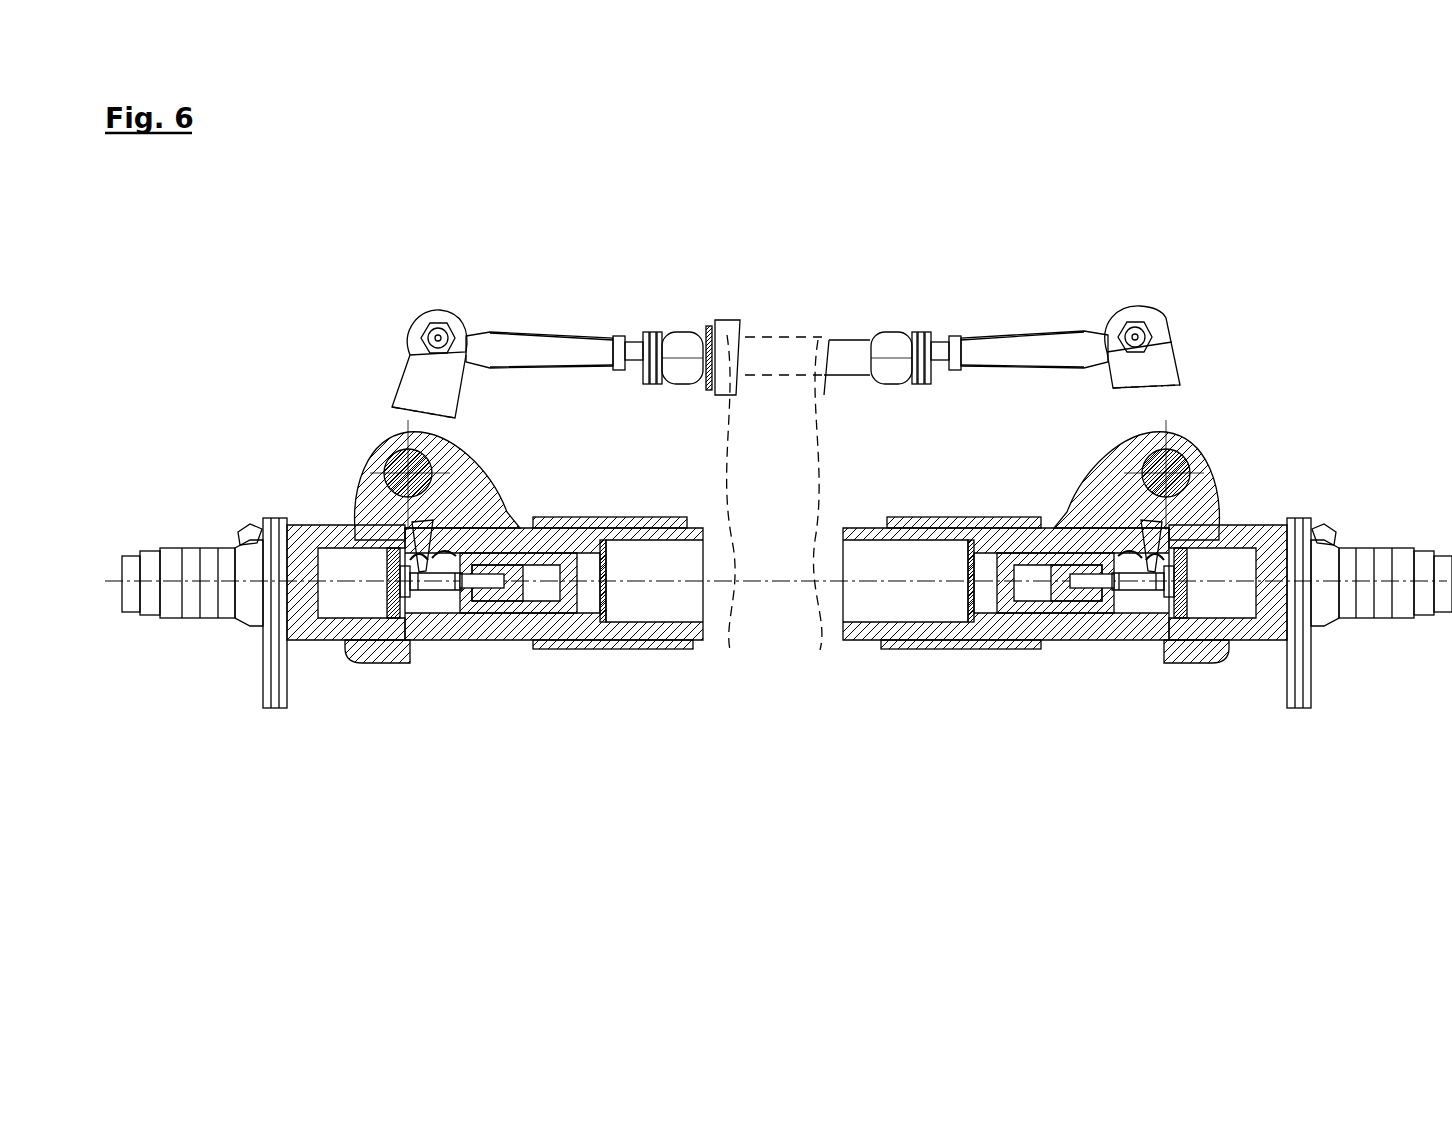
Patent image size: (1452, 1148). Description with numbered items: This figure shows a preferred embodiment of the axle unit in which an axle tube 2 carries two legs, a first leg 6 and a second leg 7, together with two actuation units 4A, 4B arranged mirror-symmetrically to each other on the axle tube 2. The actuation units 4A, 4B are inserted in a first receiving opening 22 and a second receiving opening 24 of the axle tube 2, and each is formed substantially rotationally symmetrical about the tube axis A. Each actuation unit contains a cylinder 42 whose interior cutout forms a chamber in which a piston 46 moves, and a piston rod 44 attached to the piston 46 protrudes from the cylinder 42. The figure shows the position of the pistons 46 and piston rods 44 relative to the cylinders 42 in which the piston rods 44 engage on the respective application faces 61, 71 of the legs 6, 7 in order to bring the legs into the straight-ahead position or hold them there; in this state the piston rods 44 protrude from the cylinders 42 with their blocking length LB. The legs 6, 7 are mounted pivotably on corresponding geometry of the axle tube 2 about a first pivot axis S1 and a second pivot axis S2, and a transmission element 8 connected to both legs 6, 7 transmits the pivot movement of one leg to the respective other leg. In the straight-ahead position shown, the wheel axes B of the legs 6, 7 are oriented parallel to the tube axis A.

The axle tube 2 is at (704, 642).
The first leg 6 is at (1235, 530).
The second leg 7 is at (352, 526).
The transmission element 8 is at (890, 346).
The first receiving opening 22 is at (978, 605).
The second receiving opening 24 is at (590, 608).
The cylinder 42 is at (556, 614).
The piston rod 44 is at (462, 592).
The piston 46 is at (502, 608).
The first application face 61 is at (1168, 602).
The second application face 71 is at (402, 606).
The first actuation unit 4A is at (455, 636).
The second actuation unit 4B is at (1120, 632).
The tube axis A is at (873, 580).
The wheel axis B is at (192, 590).
The first pivot axis S1 is at (1174, 470).
The second pivot axis S2 is at (400, 470).
The blocking length LB is at (1145, 552).